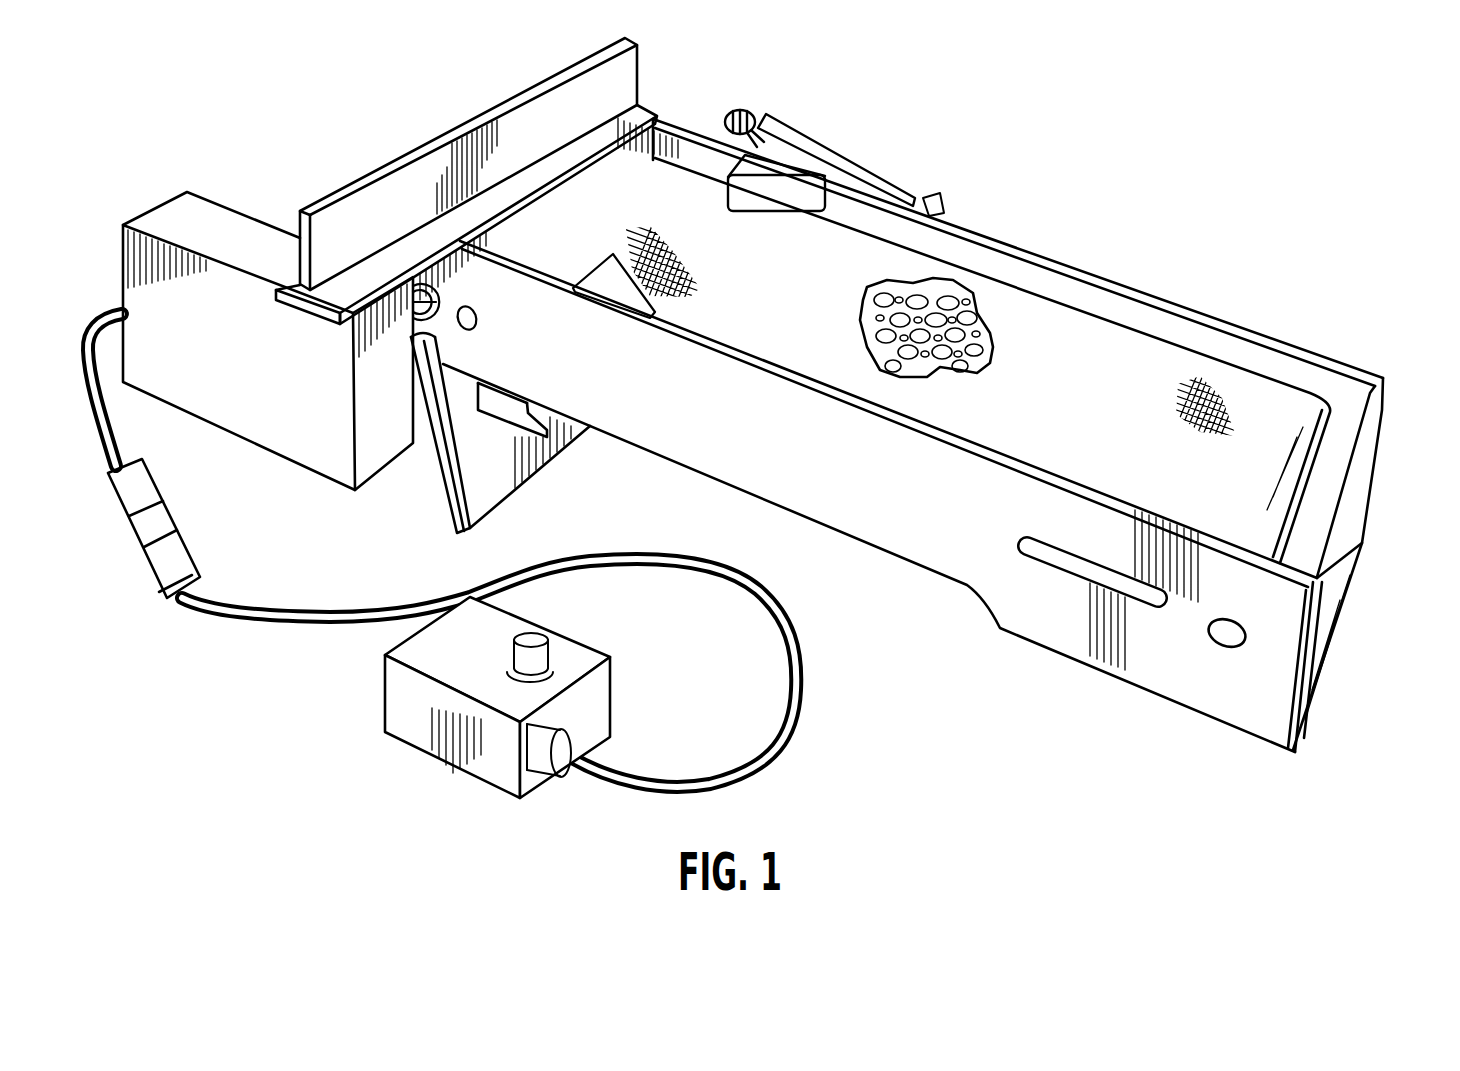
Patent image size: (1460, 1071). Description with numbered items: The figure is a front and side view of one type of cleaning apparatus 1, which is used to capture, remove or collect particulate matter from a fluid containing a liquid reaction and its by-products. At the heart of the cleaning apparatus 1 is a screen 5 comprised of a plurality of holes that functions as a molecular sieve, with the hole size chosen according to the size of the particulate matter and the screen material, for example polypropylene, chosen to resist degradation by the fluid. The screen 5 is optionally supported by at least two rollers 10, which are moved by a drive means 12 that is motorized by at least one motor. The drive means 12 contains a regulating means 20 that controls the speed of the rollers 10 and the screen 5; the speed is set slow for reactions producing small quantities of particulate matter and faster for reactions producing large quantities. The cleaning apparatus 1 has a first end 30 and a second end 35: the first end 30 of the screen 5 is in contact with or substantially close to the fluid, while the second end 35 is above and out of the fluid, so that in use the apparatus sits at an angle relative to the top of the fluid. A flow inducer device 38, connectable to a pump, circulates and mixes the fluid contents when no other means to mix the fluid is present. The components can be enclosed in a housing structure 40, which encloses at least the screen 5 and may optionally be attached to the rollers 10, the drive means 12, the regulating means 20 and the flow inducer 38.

The cleaning apparatus 1 is at (931, 425).
The screen 5 is at (1039, 383).
The rollers 10 is at (440, 326).
The drive means 12 is at (268, 341).
The regulating means 20 is at (497, 697).
The first end 30 is at (931, 435).
The second end 35 is at (322, 134).
The flow inducer device 38 is at (843, 168).
The housing structure 40 is at (1068, 273).